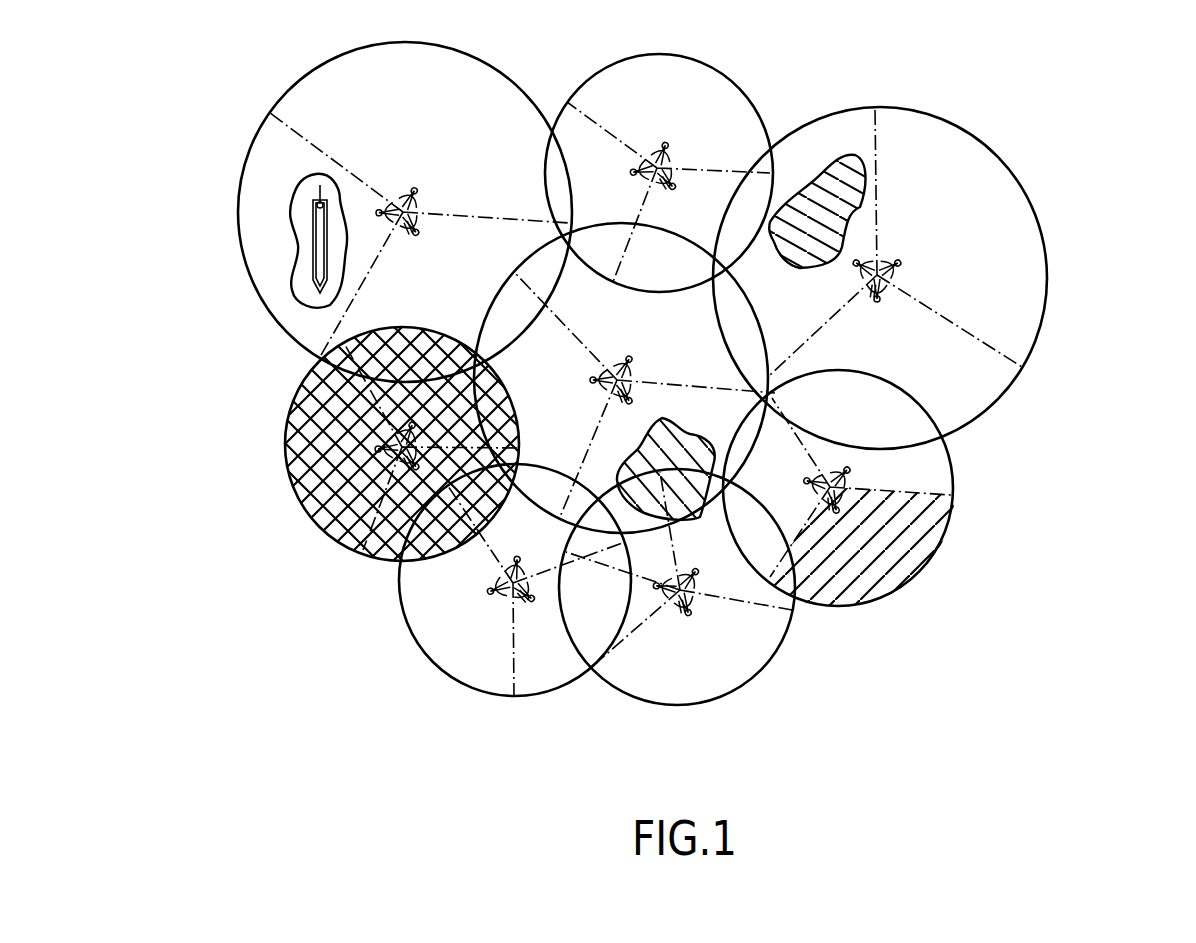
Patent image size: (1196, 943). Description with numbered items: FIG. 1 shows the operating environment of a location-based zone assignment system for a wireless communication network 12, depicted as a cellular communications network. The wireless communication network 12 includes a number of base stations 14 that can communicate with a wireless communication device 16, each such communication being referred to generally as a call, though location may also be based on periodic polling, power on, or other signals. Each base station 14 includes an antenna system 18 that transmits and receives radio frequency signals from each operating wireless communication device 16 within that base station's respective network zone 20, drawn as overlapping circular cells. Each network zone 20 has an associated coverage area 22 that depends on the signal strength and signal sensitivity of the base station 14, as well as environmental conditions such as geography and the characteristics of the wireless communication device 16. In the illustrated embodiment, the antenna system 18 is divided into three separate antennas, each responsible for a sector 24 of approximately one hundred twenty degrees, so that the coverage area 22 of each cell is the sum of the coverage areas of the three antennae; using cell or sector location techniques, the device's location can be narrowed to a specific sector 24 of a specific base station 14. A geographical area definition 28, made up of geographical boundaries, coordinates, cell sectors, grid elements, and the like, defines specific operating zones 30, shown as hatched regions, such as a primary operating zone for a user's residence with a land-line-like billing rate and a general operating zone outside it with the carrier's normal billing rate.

The wireless communication network 12 is at (1050, 429).
The base station 14 is at (418, 182).
The wireless communication device 16 is at (308, 240).
The antenna system 18 is at (886, 296).
The network zone 20 is at (1041, 325).
The coverage area 22 is at (308, 433).
The sector 24 is at (927, 532).
The geographical area definition 28 is at (1027, 75).
The operating zone 30 is at (912, 139).